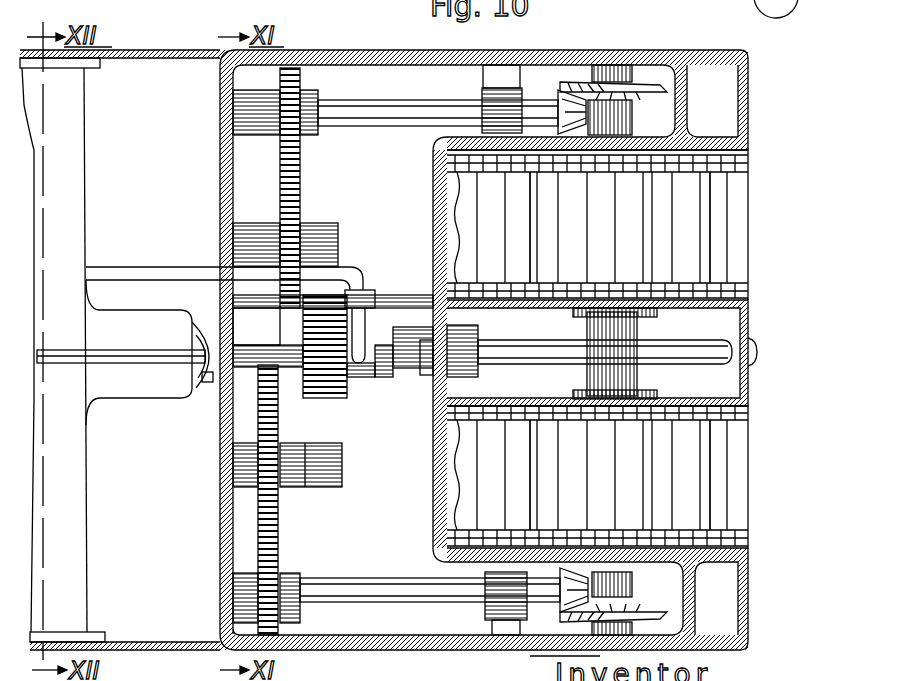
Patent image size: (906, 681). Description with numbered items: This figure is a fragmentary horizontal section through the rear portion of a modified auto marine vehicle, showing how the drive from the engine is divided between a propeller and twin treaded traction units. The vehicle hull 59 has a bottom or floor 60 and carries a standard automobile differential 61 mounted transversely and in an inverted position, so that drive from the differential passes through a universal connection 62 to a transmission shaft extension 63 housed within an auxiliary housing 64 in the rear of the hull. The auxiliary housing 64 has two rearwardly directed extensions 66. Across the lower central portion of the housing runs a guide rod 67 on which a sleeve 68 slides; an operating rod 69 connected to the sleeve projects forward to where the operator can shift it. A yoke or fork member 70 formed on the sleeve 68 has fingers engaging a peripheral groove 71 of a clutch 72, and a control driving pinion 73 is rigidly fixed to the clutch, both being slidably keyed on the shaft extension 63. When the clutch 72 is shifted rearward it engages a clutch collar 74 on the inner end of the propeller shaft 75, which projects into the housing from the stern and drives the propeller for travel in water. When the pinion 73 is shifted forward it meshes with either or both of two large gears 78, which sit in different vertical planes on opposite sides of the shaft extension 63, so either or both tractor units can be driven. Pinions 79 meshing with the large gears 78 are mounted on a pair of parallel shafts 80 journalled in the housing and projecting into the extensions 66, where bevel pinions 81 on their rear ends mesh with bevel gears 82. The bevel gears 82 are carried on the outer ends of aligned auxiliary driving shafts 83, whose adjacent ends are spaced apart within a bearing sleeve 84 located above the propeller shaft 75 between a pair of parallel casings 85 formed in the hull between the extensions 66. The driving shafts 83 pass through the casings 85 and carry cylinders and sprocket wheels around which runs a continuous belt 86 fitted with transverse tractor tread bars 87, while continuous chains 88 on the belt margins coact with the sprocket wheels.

The auto marine vehicle hull 59 is at (171, 58).
The bottom or floor 60 is at (257, 8).
The standard automobile differential 61 is at (68, 326).
The universal connection 62 is at (213, 372).
The transmission shaft extension 63 is at (247, 360).
The auxiliary housing 64 is at (231, 555).
The rearwardly directed extensions 66 is at (684, 130).
The guide rod 67 is at (388, 302).
The sleeve 68 is at (367, 290).
The operating rod 69 is at (178, 280).
The yoke or fork member 70 is at (362, 333).
The peripheral groove 71 is at (363, 382).
The clutch 72 is at (377, 378).
The control driving pinion 73 is at (326, 380).
The clutch collar 74 is at (428, 370).
The propeller shaft 75 is at (540, 322).
The large gears 78 is at (288, 202).
The pinions 79 is at (290, 84).
The parallel shafts 80 is at (398, 121).
The bevel pinions 81 is at (565, 92).
The bevel gears 82 is at (653, 93).
The auxiliary driving shafts 83 is at (625, 102).
The bearing sleeve 84 is at (600, 373).
The casings or housings 85 is at (680, 318).
The continuous belt 86 is at (680, 213).
The tractor tread bars 87 is at (713, 258).
The continuous chains 88 is at (745, 163).